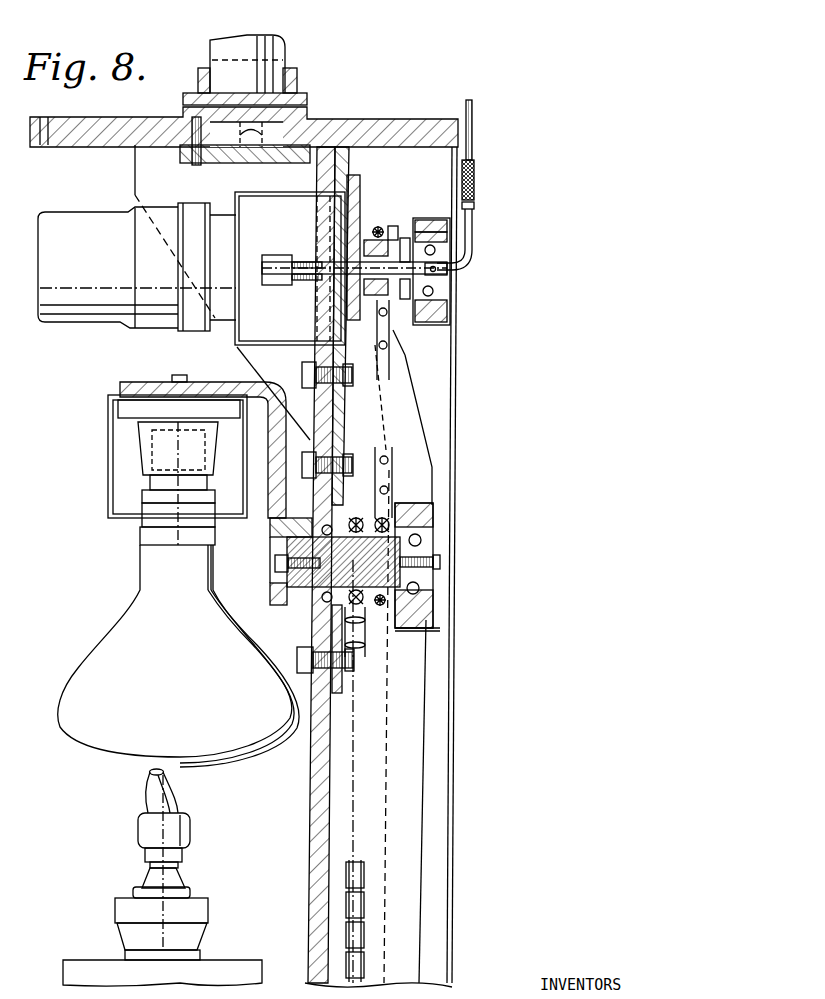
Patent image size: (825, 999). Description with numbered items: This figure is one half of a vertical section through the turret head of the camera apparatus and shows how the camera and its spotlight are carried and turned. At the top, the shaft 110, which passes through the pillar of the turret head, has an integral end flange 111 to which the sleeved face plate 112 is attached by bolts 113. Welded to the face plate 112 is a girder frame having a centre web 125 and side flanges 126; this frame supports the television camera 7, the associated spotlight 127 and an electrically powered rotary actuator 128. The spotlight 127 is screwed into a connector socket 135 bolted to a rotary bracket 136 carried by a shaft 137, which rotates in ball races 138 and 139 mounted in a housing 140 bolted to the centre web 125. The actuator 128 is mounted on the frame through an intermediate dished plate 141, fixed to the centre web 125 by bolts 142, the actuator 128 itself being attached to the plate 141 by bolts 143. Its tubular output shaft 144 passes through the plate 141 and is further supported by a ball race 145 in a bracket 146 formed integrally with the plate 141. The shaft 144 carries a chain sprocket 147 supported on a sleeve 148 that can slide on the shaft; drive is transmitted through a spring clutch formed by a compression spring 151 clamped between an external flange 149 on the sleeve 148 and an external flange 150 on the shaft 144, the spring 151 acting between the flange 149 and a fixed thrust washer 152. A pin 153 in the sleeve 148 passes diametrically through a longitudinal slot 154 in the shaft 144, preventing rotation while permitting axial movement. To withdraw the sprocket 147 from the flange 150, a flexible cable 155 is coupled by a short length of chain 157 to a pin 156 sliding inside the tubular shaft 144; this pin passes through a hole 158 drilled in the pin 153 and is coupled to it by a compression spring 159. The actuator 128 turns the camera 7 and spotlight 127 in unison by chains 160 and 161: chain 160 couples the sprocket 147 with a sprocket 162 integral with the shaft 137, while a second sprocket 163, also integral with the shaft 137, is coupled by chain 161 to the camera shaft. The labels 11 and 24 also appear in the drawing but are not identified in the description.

The television camera 7 is at (88, 972).
The frame plate 11 is at (108, 113).
The chain 24 is at (382, 842).
The shaft 110 is at (212, 50).
The integral end flange 111 is at (180, 152).
The sleeved face plate 112 is at (135, 112).
The bolts 113 is at (194, 164).
The centre web 125 is at (323, 165).
The side flanges 126 is at (380, 947).
The spotlight 127 is at (190, 679).
The electrically powered rotary actuator 128 is at (110, 266).
The connector socket 135 is at (142, 445).
The rotary bracket 136 is at (143, 382).
The shaft 137 is at (275, 561).
The ball race 138 is at (282, 530).
The ball race 139 is at (425, 605).
The housing 140 is at (413, 630).
The intermediate dished plate 141 is at (342, 175).
The bolts 142 is at (256, 360).
The bolts 143 is at (358, 215).
The tubular output shaft 144 is at (345, 275).
The ball race 145 is at (445, 297).
The bracket 146 is at (446, 310).
The chain sprocket 147 is at (393, 226).
The sleeve 148 is at (428, 220).
The external flange 149 is at (369, 302).
The external flange 150 is at (362, 297).
The compression spring 151 is at (393, 332).
The fixed thrust washer 152 is at (447, 322).
The pin 153 is at (405, 238).
The longitudinal slot 154 is at (400, 325).
The flexible cable 155 is at (473, 137).
The pin 156 is at (333, 281).
The short length of chain 157 is at (455, 258).
The hole 158 is at (445, 240).
The compression spring 159 is at (347, 259).
The chain 160 is at (373, 231).
The chain 161 is at (355, 518).
The sprocket 162 is at (386, 518).
The second sprocket 163 is at (336, 613).